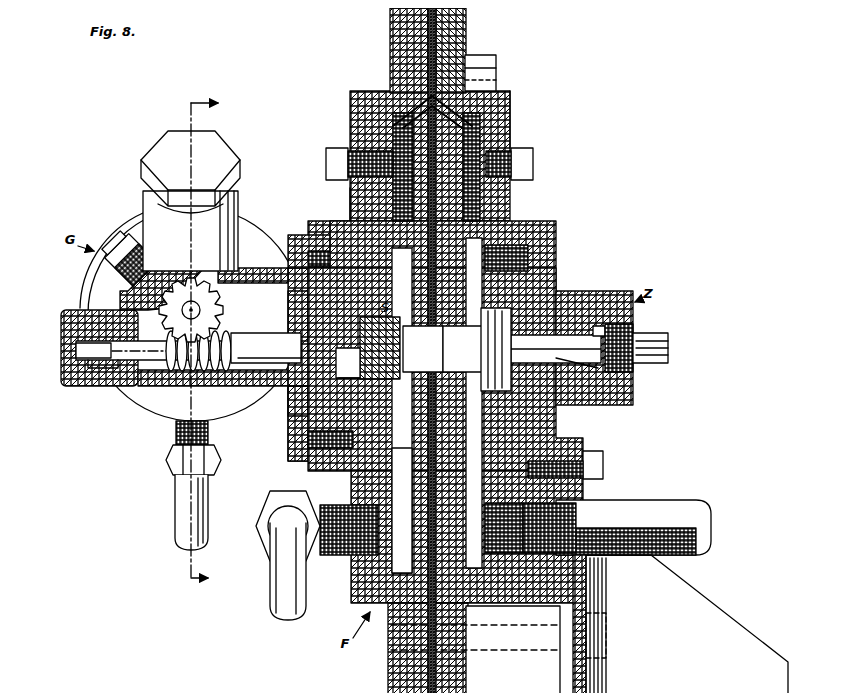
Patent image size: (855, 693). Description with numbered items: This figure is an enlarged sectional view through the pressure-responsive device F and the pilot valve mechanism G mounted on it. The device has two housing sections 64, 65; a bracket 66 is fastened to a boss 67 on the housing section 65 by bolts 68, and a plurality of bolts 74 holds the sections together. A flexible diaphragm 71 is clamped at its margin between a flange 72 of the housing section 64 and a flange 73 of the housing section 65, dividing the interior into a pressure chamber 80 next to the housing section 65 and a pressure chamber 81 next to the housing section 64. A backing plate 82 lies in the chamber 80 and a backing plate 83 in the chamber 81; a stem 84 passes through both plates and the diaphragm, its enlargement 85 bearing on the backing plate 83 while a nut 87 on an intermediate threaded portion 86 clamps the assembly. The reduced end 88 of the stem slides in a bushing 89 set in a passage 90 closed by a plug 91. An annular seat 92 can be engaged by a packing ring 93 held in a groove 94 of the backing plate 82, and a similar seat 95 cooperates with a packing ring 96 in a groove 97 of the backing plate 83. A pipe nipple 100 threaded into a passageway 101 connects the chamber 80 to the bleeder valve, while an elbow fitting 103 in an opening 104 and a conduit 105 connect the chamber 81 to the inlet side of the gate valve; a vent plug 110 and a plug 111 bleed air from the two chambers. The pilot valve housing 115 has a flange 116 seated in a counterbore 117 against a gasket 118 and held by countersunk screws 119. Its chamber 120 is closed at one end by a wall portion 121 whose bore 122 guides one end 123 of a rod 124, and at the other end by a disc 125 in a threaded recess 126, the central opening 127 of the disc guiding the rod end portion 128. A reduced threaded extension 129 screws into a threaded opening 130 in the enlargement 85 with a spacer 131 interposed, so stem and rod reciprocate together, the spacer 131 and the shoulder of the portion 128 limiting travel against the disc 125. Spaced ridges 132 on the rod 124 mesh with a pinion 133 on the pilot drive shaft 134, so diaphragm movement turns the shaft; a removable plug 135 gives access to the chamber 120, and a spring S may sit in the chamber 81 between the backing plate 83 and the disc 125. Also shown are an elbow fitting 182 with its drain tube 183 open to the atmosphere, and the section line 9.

The housing section 64 is at (345, 88).
The housing section 65 is at (548, 241).
The bracket 66 is at (720, 632).
The boss 67 is at (580, 570).
The bolts 68 is at (596, 466).
The flexible diaphragm 71 is at (435, 44).
The flange 72 is at (382, 10).
The flange 73 is at (458, 6).
The bolts 74 is at (488, 54).
The pressure chamber 80 is at (488, 207).
The pressure chamber 81 is at (372, 192).
The backing plate 82 is at (496, 264).
The backing plate 83 is at (392, 428).
The stem 84 is at (600, 397).
The enlargement 85 is at (398, 334).
The intermediate threaded portion 86 is at (470, 342).
The nut 87 is at (487, 386).
The reduced end 88 is at (590, 318).
The bushing 89 is at (558, 376).
The passage 90 is at (600, 318).
The plug 91 is at (660, 333).
The annular seat 92 is at (503, 116).
The packing ring 93 is at (503, 96).
The groove 94 is at (488, 70).
The annular seat 95 is at (385, 126).
The packing ring 96 is at (402, 96).
The groove 97 is at (405, 82).
The pipe nipple 100 is at (680, 492).
The passageway 101 is at (530, 528).
The elbow fitting 103 is at (284, 483).
The opening 104 is at (350, 548).
The conduit 105 is at (265, 576).
The vent plug 110 is at (526, 157).
The plug 111 is at (318, 157).
The housing 115 is at (122, 213).
The flange 116 is at (284, 440).
The counterbore 117 is at (322, 230).
The gasket 118 is at (300, 431).
The countersunk screws 119 is at (300, 249).
The chamber 120 is at (142, 402).
The wall portion 121 is at (53, 325).
The bore 122 is at (85, 360).
The end 123 is at (110, 366).
The rod 124 is at (246, 333).
The disc 125 is at (284, 306).
The threaded recess 126 is at (290, 405).
The central opening 127 is at (290, 340).
The end portion 128 is at (334, 380).
The reduced threaded extension 129 is at (370, 340).
The threaded opening 130 is at (404, 410).
The spacer 131 is at (364, 366).
The spaced ridges 132 is at (186, 366).
The pinion 133 is at (215, 262).
The pilot drive shaft 134 is at (192, 300).
The removable plug 135 is at (104, 255).
The elbow fitting 182 is at (168, 430).
The drain tube 183 is at (167, 530).
The section line 9 is at (210, 342).